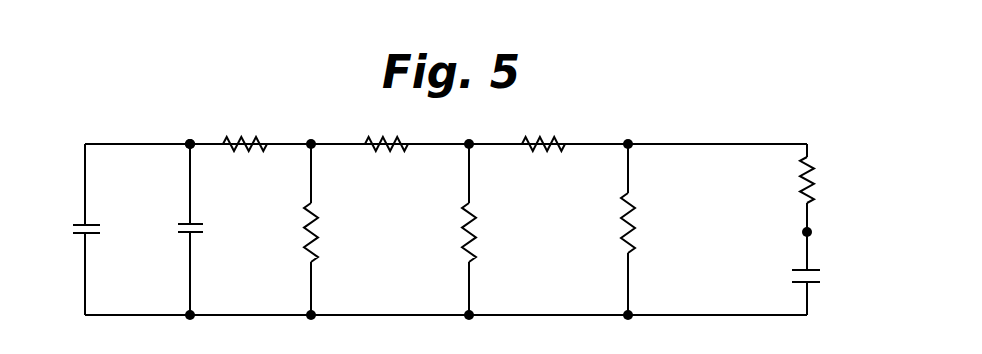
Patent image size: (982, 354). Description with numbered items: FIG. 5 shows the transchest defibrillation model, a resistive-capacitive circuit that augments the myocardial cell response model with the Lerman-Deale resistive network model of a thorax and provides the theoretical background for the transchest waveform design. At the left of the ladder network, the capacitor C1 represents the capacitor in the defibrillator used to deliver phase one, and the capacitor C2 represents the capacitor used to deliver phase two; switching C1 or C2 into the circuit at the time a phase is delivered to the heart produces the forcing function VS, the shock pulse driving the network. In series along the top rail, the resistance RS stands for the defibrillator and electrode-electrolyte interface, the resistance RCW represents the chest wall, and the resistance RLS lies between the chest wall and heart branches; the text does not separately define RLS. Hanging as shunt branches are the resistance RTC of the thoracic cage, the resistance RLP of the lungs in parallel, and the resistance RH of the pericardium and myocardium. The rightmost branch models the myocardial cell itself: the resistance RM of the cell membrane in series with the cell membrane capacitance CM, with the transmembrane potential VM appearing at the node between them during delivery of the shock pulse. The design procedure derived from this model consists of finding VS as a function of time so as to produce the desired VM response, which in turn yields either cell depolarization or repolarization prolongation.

The capacitor C1 is at (70, 225).
The capacitor C2 is at (176, 231).
The forcing function VS is at (190, 126).
The resistance of the defibrillator RS is at (245, 125).
The resistance of the chest wall RCW is at (384, 125).
The resistance of the thoracic cage RTC is at (334, 232).
The resistance of the lungs in parallel RLP is at (492, 232).
The lead/series resistance RLS is at (543, 125).
The resistance of the pericardium and myocardium RH is at (647, 223).
The resistance of the myocardial cell membrane RM is at (827, 180).
The transmembrane potential VM is at (828, 234).
The cell membrane capacitance CM is at (825, 274).